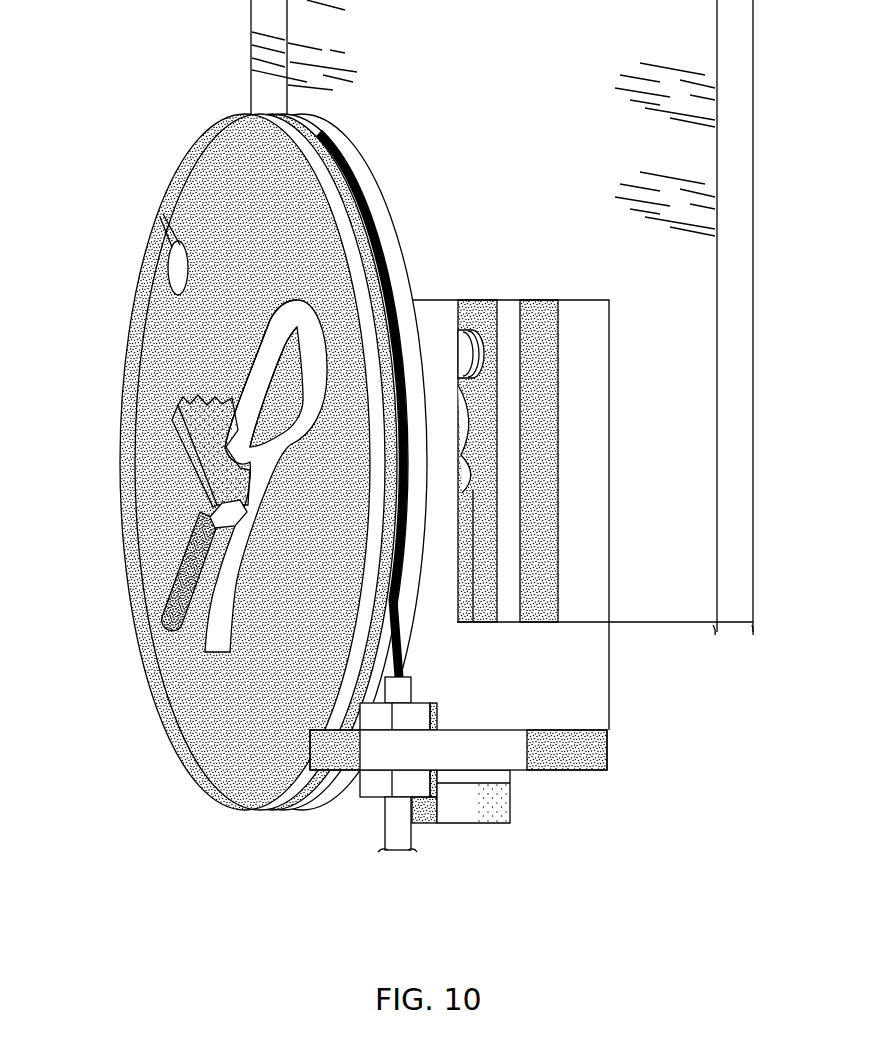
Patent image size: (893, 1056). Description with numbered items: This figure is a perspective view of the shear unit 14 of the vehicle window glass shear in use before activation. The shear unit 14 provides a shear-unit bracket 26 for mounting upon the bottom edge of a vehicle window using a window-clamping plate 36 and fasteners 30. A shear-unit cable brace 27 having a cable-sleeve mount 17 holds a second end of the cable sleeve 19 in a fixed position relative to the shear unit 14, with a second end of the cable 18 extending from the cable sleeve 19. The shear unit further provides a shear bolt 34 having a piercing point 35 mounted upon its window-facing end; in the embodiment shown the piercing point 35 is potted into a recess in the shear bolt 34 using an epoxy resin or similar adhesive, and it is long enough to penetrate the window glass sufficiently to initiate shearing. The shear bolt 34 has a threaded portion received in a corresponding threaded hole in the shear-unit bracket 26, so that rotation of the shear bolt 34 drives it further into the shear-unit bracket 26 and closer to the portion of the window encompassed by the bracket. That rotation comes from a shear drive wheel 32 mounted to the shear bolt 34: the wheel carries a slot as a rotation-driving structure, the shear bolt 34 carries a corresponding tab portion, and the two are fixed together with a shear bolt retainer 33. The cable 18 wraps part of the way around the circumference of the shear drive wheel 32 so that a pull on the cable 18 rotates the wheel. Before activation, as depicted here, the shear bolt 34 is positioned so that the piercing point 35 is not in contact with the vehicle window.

The shear unit 14 is at (406, 444).
The cable-sleeve mount 17 is at (372, 790).
The cable 18 is at (405, 639).
The cable sleeve 19 is at (410, 837).
The shear-unit bracket 26 is at (583, 498).
The shear-unit cable brace 27 is at (605, 748).
The fasteners 30 is at (475, 324).
The shear drive wheel 32 is at (284, 462).
The shear bolt retainer 33 is at (303, 432).
The shear bolt 34 is at (194, 407).
The piercing point 35 is at (463, 460).
The window-clamping plate 36 is at (506, 307).